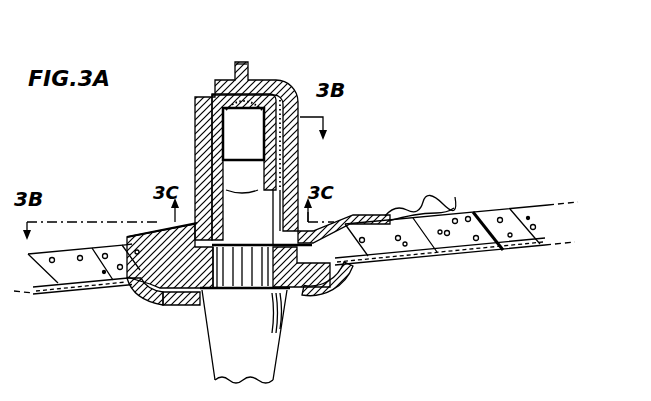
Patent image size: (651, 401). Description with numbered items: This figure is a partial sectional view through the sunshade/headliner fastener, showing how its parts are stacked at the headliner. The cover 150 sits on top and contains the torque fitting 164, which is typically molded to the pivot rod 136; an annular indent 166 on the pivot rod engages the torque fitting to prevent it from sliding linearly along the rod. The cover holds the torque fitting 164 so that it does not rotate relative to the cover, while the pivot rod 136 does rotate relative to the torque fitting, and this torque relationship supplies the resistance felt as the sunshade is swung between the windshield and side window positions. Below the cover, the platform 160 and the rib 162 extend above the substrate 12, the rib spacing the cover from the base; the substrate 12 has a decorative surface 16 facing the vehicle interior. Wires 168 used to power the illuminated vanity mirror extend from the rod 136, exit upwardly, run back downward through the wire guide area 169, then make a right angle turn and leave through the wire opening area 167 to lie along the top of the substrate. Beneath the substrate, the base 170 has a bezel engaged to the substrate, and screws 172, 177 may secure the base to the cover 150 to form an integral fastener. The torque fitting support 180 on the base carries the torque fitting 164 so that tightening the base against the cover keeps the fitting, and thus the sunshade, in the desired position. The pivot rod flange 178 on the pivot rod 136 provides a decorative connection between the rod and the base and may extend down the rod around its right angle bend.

The substrate 12 is at (500, 212).
The decorative surface 16 is at (512, 252).
The pivot rod 136 is at (222, 130).
The cover 150 is at (303, 80).
The platform 160 is at (134, 237).
The rib 162 is at (135, 255).
The torque fitting 164 is at (214, 108).
The annular indent 166 is at (242, 182).
The wire opening area 167 is at (360, 214).
The wires 168 is at (258, 90).
The wire guide area 169 is at (300, 168).
The base 170 is at (365, 272).
The screw 172 is at (362, 284).
The screw 177 is at (152, 303).
The pivot rod flange 178 is at (214, 297).
The torque fitting support 180 is at (238, 290).